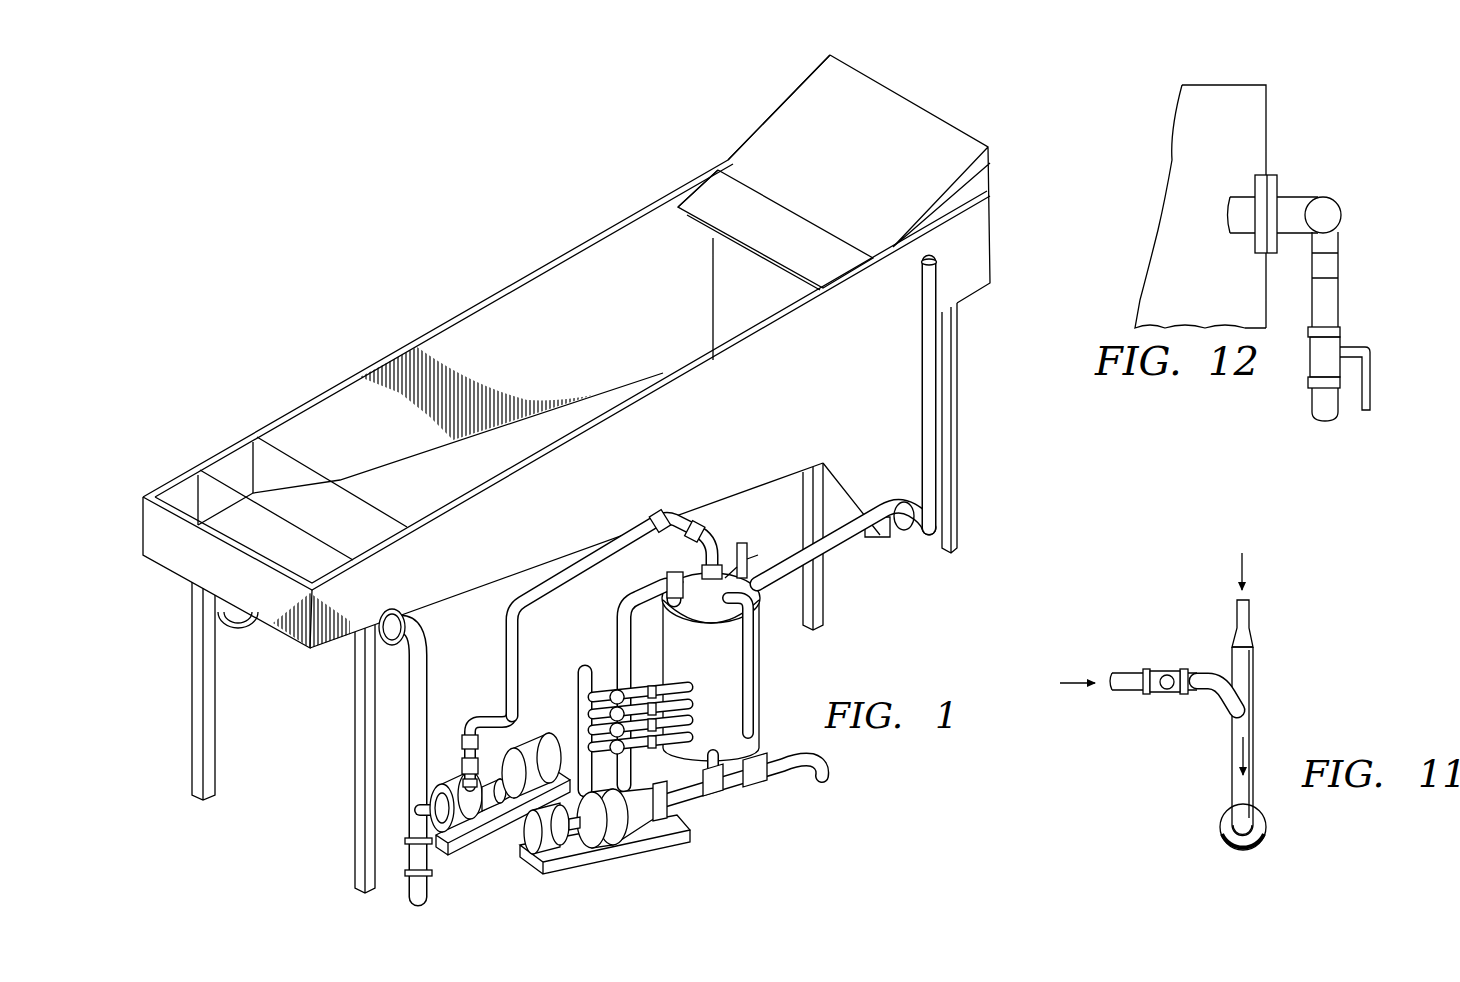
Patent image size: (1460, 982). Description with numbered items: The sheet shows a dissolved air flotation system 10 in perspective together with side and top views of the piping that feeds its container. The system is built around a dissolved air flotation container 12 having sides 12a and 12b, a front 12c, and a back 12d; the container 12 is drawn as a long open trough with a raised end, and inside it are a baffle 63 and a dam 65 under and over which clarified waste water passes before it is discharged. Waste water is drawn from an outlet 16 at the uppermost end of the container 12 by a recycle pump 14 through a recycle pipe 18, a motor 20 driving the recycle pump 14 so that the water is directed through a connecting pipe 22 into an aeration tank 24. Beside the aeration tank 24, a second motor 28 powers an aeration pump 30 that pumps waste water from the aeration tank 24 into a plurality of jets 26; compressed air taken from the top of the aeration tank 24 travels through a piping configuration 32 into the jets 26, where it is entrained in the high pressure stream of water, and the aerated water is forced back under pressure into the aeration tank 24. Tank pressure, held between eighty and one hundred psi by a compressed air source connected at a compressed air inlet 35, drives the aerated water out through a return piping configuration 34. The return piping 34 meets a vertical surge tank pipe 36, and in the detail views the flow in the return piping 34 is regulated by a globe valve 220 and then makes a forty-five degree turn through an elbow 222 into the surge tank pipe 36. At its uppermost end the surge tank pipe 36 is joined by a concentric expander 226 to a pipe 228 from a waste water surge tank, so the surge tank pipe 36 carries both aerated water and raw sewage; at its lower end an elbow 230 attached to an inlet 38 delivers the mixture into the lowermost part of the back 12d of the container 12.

In FIG. 1, the dissolved air flotation system 10 is at (468, 185).
In FIG. 1, the dissolved air flotation container 12 is at (565, 474).
In FIG. 12, the dissolved air flotation container 12 is at (1229, 158).
In FIG. 1, the side 12a is at (708, 456).
In FIG. 1, the side 12b is at (561, 364).
In FIG. 1, the front 12c is at (193, 565).
In FIG. 1, the back 12d is at (728, 300).
In FIG. 1, the recycle pump 14 is at (450, 778).
In FIG. 1, the outlet 16 is at (408, 622).
In FIG. 1, the recycle pipe 18 is at (429, 672).
In FIG. 1, the motor 20 is at (520, 745).
In FIG. 1, the connecting pipe 22 is at (533, 598).
In FIG. 1, the aeration tank 24 is at (732, 670).
In FIG. 1, the jets 26 is at (694, 683).
In FIG. 1, the motor 28 is at (553, 848).
In FIG. 1, the aeration pump 30 is at (615, 840).
In FIG. 1, the piping configuration 32 is at (595, 645).
In FIG. 1, the return piping configuration 34 is at (845, 548).
In FIG. 12, the return piping configuration 34 is at (1312, 403).
In FIG. 11, the return piping configuration 34 is at (1115, 672).
In FIG. 1, the compressed air inlet 35 is at (744, 543).
In FIG. 1, the surge tank pipe 36 is at (922, 370).
In FIG. 12, the surge tank pipe 36 is at (1342, 208).
In FIG. 11, the surge tank pipe 36 is at (1255, 703).
In FIG. 1, the inlet 38 is at (900, 533).
In FIG. 12, the inlet 38 is at (1270, 176).
In FIG. 11, the inlet 38 is at (1266, 828).
In FIG. 1, the baffle 63 is at (247, 455).
In FIG. 1, the dam 65 is at (197, 495).
In FIG. 12, the globe valve 220 is at (1340, 345).
In FIG. 11, the globe valve 220 is at (1160, 670).
In FIG. 12, the elbow 222 is at (1340, 262).
In FIG. 11, the elbow 222 is at (1207, 700).
In FIG. 11, the concentric expander 226 is at (1255, 648).
In FIG. 11, the pipe 228 is at (1252, 614).
In FIG. 12, the elbow 230 is at (1297, 200).
In FIG. 11, the elbow 230 is at (1235, 823).